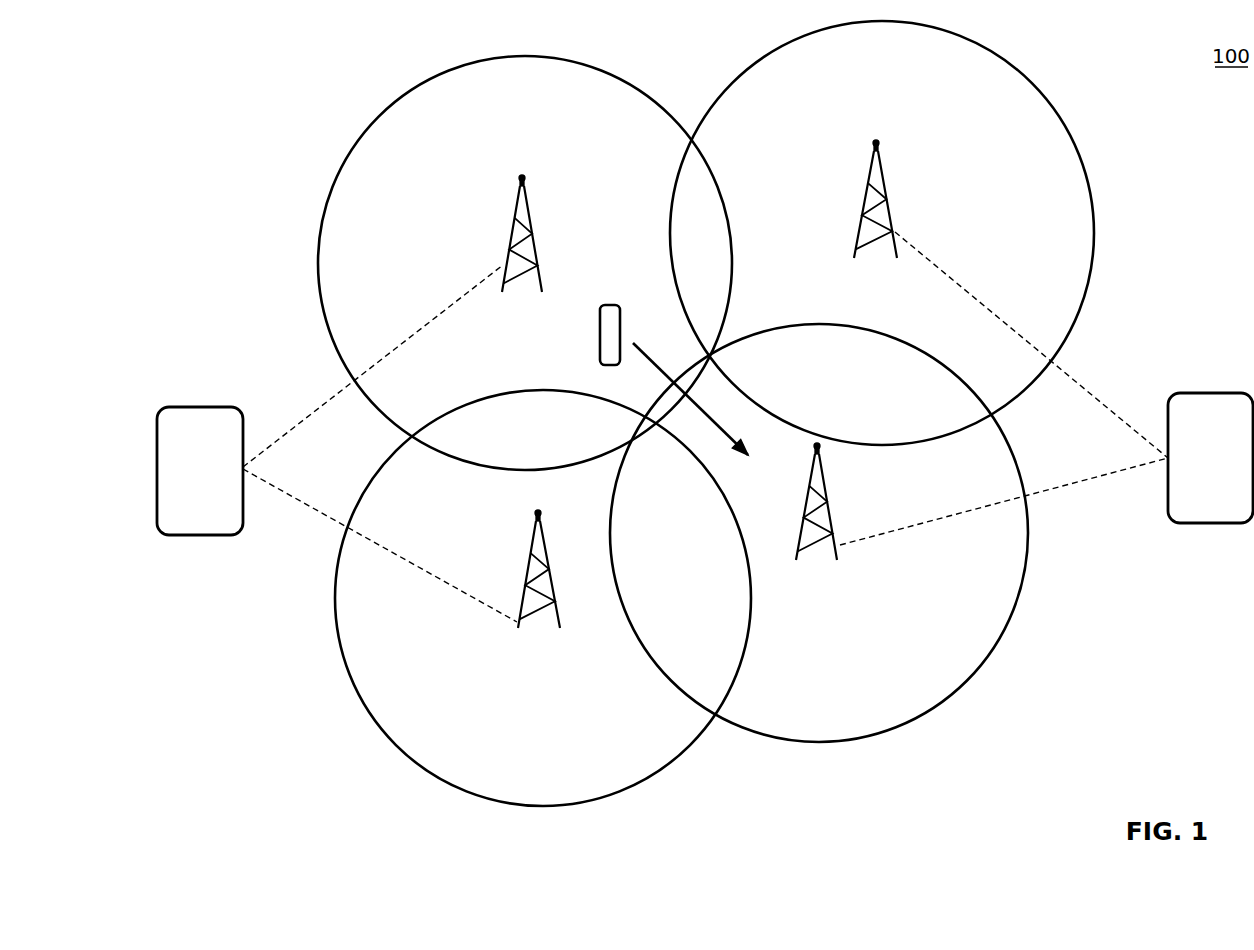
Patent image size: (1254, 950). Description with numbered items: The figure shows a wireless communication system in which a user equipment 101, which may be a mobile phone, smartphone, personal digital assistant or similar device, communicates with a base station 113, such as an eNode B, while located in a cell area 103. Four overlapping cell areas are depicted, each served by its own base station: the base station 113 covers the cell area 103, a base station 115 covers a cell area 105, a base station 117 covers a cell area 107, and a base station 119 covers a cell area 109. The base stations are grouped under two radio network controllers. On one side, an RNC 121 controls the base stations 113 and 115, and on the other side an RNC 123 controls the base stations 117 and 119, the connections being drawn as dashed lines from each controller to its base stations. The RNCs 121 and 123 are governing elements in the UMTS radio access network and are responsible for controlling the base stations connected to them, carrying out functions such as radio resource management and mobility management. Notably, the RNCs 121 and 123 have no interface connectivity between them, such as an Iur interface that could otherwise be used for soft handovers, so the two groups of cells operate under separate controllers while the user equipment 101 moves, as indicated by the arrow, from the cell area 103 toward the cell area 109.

The user equipment 101 is at (598, 345).
The cell area 103 is at (372, 118).
The cell area 105 is at (343, 672).
The cell area 107 is at (742, 67).
The cell area 109 is at (930, 705).
The base station 113 is at (508, 222).
The base station 115 is at (524, 580).
The base station 117 is at (860, 218).
The base station 119 is at (834, 495).
The RNC 121 is at (213, 405).
The RNC 123 is at (1195, 393).